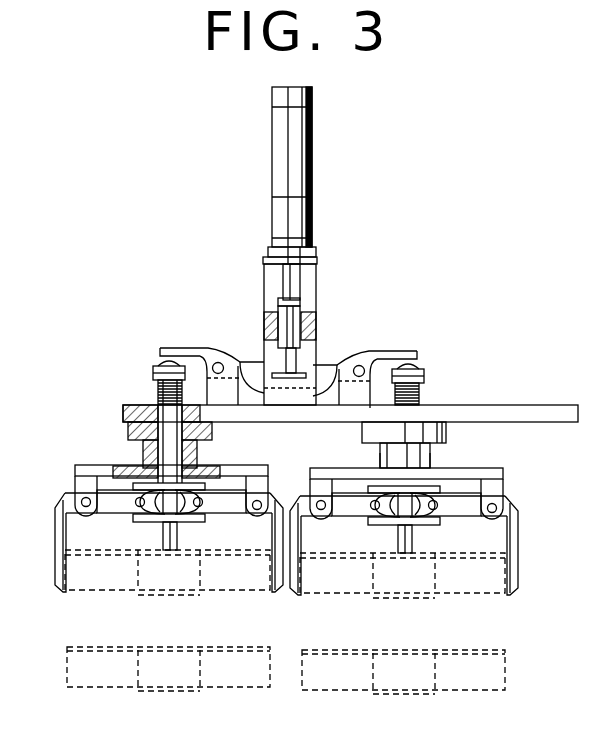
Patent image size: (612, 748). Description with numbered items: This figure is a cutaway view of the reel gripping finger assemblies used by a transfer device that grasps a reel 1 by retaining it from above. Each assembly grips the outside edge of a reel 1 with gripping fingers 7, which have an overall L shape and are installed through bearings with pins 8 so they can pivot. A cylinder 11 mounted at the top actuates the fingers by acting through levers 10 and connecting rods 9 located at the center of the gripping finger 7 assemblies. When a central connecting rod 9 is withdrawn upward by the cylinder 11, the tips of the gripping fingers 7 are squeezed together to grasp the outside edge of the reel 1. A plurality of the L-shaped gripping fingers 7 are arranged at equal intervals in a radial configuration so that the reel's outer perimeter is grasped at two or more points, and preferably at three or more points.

The reel 1 is at (210, 592).
The gripping finger 7 is at (56, 538).
The pin 8 is at (82, 500).
The connecting rod 9 is at (200, 458).
The lever 10 is at (372, 352).
The cylinder 11 is at (313, 153).